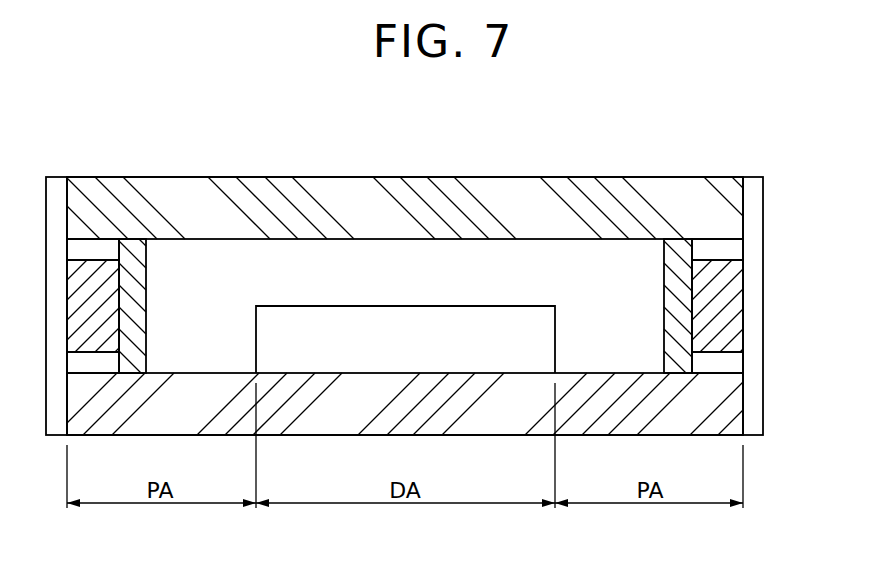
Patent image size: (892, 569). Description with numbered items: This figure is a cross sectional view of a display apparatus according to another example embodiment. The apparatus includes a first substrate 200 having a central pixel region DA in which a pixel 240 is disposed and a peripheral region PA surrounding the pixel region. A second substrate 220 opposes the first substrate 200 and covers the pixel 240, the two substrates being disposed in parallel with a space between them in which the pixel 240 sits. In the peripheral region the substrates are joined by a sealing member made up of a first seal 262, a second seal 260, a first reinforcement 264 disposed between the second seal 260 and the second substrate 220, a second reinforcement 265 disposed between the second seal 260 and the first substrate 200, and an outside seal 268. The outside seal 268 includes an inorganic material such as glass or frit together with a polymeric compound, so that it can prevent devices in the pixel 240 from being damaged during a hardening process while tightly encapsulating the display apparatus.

The first substrate 200 is at (733, 416).
The second substrate 220 is at (733, 205).
The pixel 240 is at (543, 333).
The second seal 260 is at (731, 277).
The first seal 262 is at (680, 302).
The first reinforcement 264 is at (731, 250).
The second reinforcement 265 is at (732, 361).
The outside seal 268 is at (755, 387).